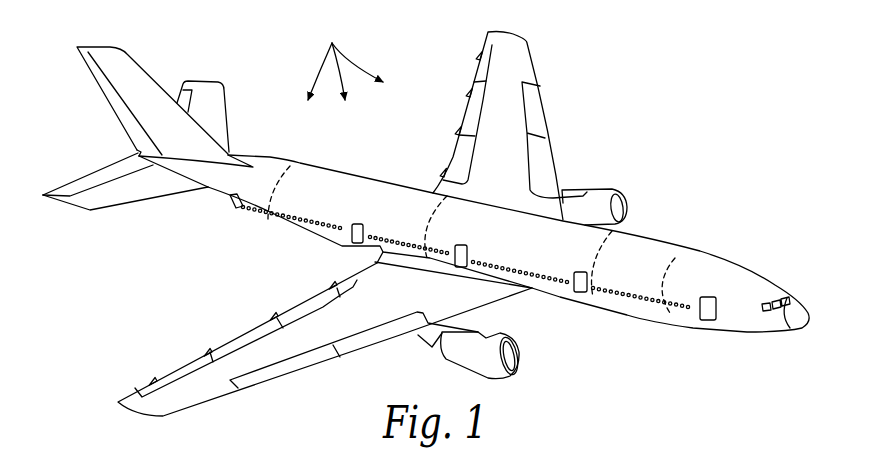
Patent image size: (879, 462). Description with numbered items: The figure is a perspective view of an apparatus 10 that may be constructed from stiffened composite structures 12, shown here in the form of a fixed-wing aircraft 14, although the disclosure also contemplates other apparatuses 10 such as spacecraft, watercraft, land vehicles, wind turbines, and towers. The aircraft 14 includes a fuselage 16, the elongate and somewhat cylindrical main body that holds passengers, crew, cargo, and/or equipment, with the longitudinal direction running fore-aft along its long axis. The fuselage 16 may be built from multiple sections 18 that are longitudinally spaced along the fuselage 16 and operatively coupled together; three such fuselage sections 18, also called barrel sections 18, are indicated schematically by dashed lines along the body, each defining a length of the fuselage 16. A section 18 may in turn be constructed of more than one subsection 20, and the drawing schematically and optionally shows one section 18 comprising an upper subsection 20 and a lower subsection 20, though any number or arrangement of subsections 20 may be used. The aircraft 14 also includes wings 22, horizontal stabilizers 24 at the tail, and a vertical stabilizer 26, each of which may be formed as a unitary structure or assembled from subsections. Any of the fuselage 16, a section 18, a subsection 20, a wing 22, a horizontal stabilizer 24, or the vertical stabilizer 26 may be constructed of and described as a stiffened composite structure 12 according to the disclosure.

The apparatus 10 is at (742, 153).
The stiffened composite structure 12 is at (332, 43).
The aircraft 14 is at (692, 108).
The fuselage 16 is at (588, 217).
The fuselage section 18 is at (292, 231).
The subsection 20 is at (675, 258).
The wing 22 is at (531, 62).
The horizontal stabilizer 24 is at (227, 118).
The vertical stabilizer 26 is at (147, 72).